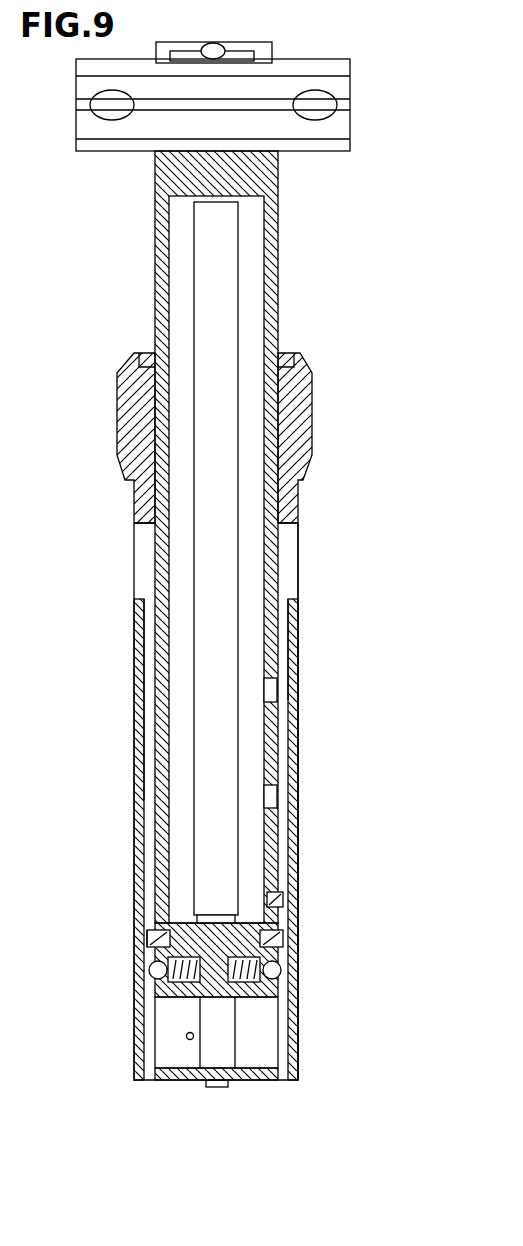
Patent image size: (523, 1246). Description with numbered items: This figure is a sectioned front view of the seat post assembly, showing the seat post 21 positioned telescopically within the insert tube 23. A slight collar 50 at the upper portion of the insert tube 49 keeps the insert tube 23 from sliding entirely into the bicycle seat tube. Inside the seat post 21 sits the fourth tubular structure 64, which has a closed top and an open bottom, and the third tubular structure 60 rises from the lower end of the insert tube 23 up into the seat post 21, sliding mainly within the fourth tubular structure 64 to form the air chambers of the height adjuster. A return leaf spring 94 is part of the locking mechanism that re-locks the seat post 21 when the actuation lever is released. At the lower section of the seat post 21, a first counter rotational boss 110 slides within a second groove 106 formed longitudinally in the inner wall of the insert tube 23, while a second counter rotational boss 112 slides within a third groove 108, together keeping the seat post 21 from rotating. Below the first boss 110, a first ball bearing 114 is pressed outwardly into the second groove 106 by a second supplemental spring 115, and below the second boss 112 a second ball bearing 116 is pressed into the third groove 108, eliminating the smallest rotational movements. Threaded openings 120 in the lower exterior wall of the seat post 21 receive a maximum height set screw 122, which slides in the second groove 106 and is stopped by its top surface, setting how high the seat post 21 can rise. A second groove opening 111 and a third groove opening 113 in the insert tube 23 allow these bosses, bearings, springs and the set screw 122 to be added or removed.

The seat post 21 is at (161, 246).
The fourth tubular structure 64 is at (236, 284).
The collar 50 is at (297, 430).
The third groove opening 113 is at (140, 562).
The second groove opening 111 is at (290, 555).
The insert tube 23 is at (140, 648).
The second groove 106 is at (283, 668).
The third groove 108 is at (150, 707).
The upper portion of the insert tube 49 is at (140, 766).
The threaded openings 120 is at (280, 787).
The maximum height set screw 122 is at (283, 905).
The first counter rotational boss 110 is at (283, 940).
The second counter rotational boss 112 is at (152, 938).
The second ball bearing 116 is at (158, 968).
The second supplemental spring 115 is at (175, 982).
The first ball bearing 114 is at (278, 972).
The return leaf spring 94 is at (190, 1036).
The third tubular structure 60 is at (210, 1050).